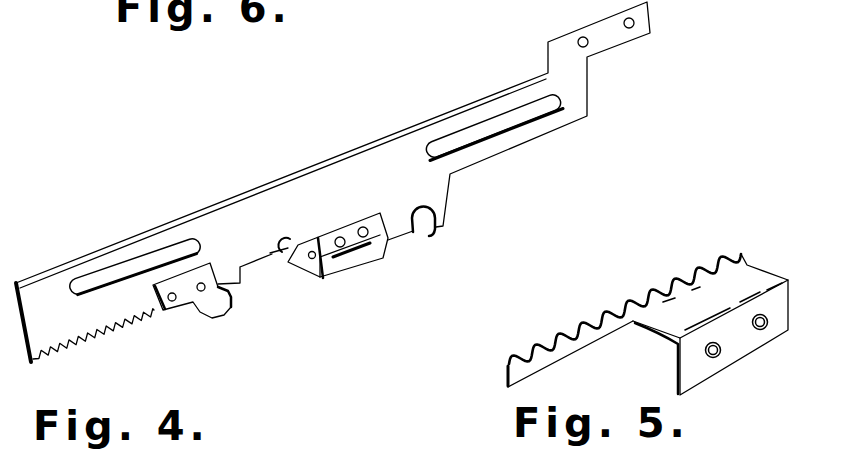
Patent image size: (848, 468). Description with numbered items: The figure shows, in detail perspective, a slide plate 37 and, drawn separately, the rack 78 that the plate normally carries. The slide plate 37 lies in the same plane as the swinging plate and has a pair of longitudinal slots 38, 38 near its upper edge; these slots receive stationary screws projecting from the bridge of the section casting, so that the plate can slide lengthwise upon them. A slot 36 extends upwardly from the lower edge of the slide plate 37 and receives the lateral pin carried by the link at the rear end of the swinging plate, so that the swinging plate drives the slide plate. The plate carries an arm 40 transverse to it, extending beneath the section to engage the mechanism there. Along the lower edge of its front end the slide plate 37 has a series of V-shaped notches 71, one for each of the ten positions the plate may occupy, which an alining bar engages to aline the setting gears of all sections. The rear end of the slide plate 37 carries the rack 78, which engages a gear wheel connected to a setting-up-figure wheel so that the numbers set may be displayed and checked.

In FIG. 4, the slot 36 is at (432, 233).
In FIG. 4, the slide plate 37 is at (306, 168).
In FIG. 4, the longitudinal slots 38 is at (122, 262).
In FIG. 4, the arm 40 is at (333, 278).
In FIG. 4, the V-shaped notches 71 is at (137, 320).
In FIG. 5, the rack 78 is at (656, 292).